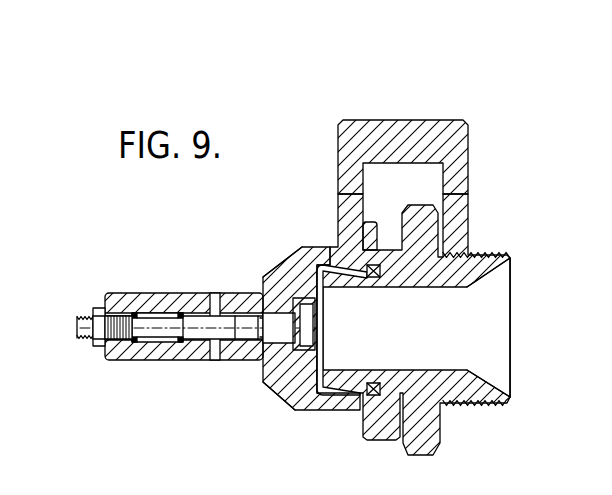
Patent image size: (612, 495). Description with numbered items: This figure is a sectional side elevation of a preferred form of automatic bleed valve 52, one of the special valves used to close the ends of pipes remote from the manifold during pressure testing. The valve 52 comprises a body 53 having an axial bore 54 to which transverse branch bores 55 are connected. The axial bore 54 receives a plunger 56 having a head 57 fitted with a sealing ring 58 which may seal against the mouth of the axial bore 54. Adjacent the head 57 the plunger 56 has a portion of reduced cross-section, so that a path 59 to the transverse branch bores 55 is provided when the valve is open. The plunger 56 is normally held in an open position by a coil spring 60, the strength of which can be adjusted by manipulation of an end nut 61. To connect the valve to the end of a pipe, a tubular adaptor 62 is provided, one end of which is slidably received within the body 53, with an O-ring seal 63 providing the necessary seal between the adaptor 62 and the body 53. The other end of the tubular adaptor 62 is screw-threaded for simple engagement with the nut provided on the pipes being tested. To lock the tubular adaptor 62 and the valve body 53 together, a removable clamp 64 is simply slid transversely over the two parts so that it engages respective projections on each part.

The valve 52 is at (509, 204).
The body 53 is at (283, 262).
The axial bore 54 is at (173, 315).
The transverse branch bores 55 is at (285, 293).
The plunger 56 is at (120, 341).
The head 57 is at (313, 324).
The sealing ring 58 is at (318, 265).
The path 59 is at (216, 360).
The coil spring 60 is at (147, 296).
The end nut 61 is at (84, 313).
The tubular adaptor 62 is at (491, 275).
The O-ring seal 63 is at (373, 220).
The removable clamp 64 is at (400, 140).